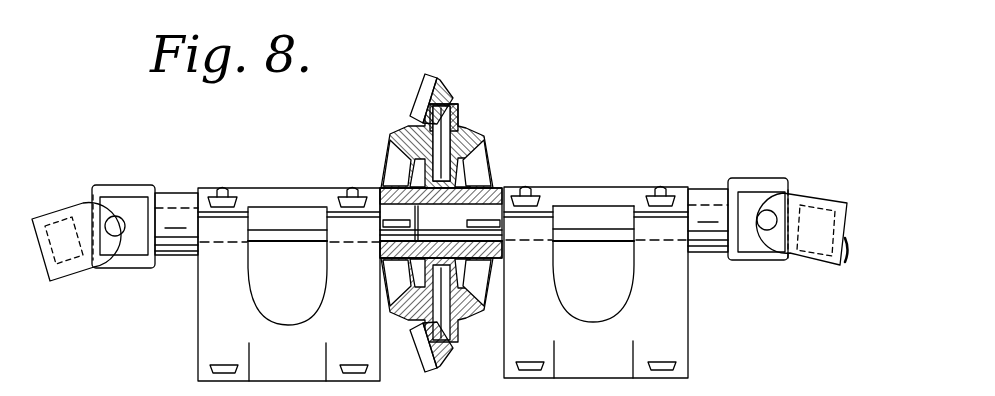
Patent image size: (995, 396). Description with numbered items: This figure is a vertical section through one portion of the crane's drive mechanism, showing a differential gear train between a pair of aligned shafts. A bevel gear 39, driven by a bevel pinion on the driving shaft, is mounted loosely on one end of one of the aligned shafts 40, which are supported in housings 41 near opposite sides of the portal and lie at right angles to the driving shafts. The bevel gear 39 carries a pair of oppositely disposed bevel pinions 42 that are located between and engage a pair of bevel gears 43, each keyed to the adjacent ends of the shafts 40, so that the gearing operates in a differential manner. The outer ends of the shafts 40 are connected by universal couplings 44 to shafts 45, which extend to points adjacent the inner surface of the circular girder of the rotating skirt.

The bevel gear 39 is at (446, 86).
The aligned shafts 40 is at (272, 208).
The housings 41 is at (197, 323).
The bevel pinions 42 is at (462, 131).
The bevel gears 43 is at (388, 165).
The universal couplings 44 is at (115, 192).
The shafts 45 is at (843, 263).